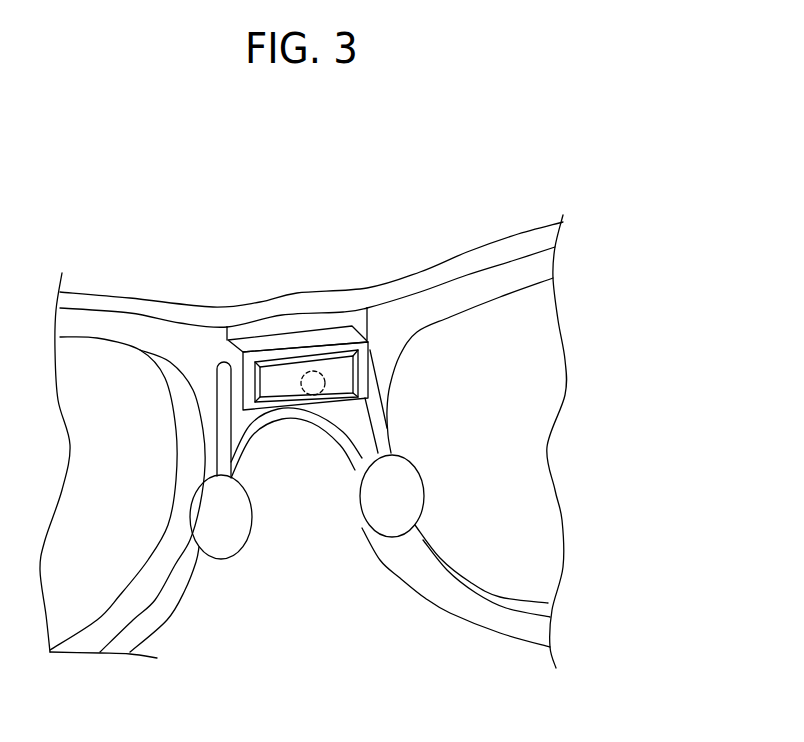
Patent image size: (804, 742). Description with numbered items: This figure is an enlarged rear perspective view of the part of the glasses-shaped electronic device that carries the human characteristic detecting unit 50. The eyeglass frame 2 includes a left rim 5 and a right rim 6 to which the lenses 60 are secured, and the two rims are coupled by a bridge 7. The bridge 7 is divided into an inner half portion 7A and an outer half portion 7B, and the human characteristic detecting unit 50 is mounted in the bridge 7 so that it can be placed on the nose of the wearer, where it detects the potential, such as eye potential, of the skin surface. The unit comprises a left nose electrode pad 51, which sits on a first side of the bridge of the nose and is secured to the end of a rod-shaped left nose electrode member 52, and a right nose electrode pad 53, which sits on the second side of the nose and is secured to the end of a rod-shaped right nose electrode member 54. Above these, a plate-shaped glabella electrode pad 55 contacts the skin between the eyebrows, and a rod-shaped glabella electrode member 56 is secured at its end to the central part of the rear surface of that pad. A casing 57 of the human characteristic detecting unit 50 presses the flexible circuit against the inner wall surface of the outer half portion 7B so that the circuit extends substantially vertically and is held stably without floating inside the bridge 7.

The eyeglass frame 2 is at (521, 242).
The left rim 5 is at (78, 302).
The right rim 6 is at (462, 260).
The bridge 7 is at (372, 226).
The inner half portion 7A is at (338, 320).
The outer half portion 7B is at (293, 307).
The human characteristic detecting unit 50 is at (263, 327).
The left nose electrode pad 51 is at (220, 548).
The left nose electrode member 52 is at (223, 422).
The right nose electrode pad 53 is at (392, 528).
The right nose electrode member 54 is at (383, 423).
The glabella electrode pad 55 is at (270, 395).
The glabella electrode member 56 is at (324, 391).
The casing 57 is at (360, 315).
The lenses 60 is at (92, 590).